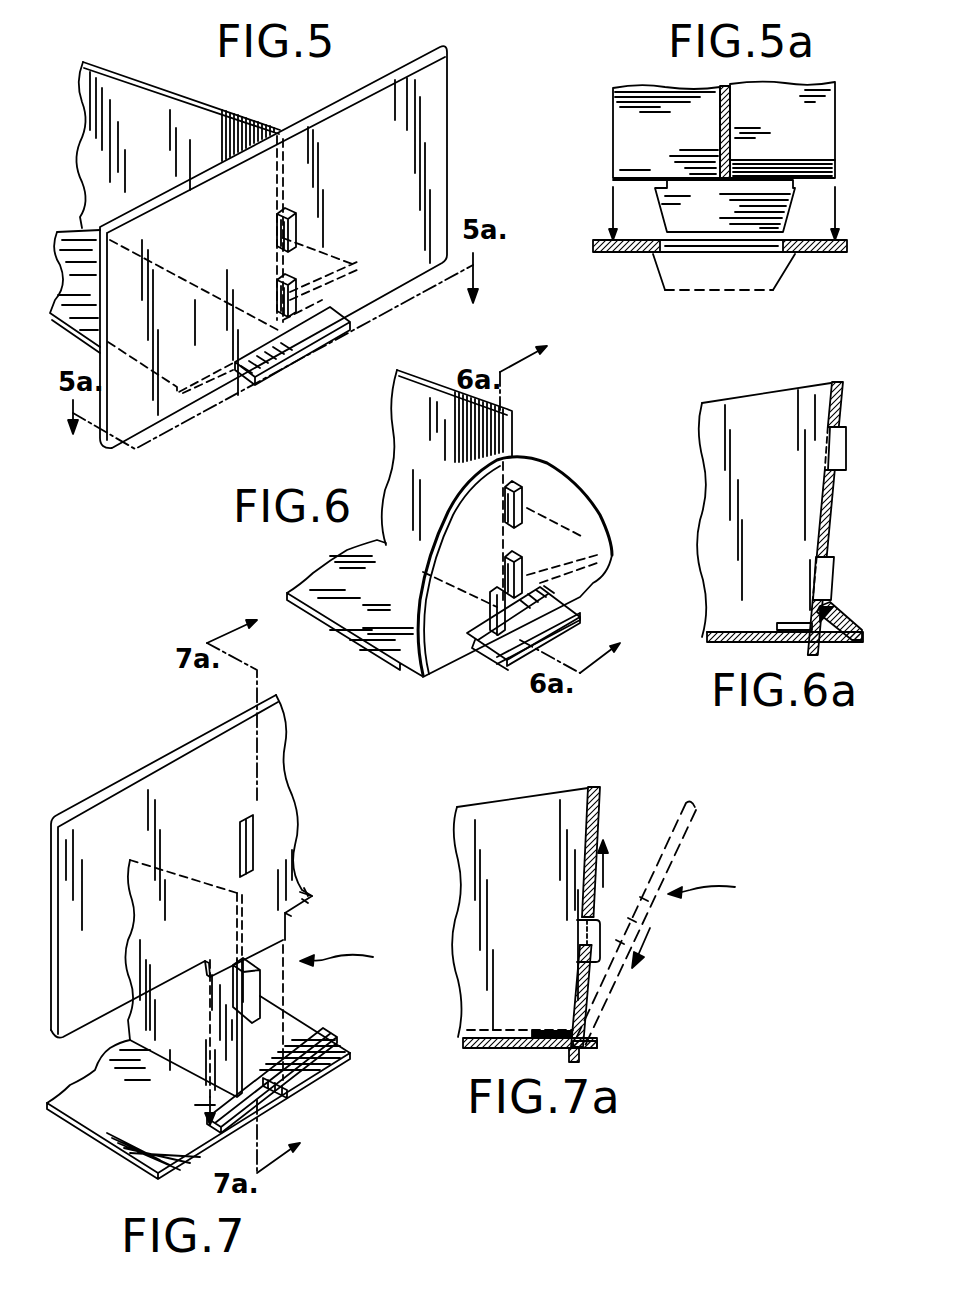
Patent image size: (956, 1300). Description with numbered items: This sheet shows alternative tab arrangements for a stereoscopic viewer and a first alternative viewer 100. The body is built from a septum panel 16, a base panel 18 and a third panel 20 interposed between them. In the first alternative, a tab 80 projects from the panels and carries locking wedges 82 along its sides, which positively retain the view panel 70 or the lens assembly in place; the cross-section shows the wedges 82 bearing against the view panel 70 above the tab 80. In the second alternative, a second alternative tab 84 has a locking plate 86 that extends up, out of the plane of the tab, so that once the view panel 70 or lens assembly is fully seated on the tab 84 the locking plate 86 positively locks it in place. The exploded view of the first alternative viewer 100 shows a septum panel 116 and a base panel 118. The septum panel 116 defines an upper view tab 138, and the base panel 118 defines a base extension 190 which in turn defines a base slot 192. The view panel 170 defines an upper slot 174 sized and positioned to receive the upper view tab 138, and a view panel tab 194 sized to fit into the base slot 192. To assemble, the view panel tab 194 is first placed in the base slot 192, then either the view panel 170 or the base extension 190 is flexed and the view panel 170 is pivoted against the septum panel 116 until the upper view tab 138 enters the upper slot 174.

In FIG. 5, the septum panel 16 is at (170, 142).
In FIG. 6, the septum panel 16 is at (431, 478).
In FIG. 6a, the septum panel 16 is at (781, 506).
In FIG. 5, the base panel 18 is at (91, 261).
In FIG. 5a, the base panel 18 is at (688, 141).
In FIG. 6, the base panel 18 is at (395, 612).
In FIG. 6a, the base panel 18 is at (720, 642).
In FIG. 5, the third panel 20 is at (335, 250).
In FIG. 5a, the third panel 20 is at (804, 141).
In FIG. 5, the view panel 70 is at (385, 189).
In FIG. 5a, the view panel 70 is at (810, 255).
In FIG. 6, the view panel 70 is at (557, 493).
In FIG. 6a, the view panel 70 is at (836, 502).
In FIG. 5, the tab 80 is at (313, 347).
In FIG. 5a, the tab 80 is at (744, 219).
In FIG. 5, the locking wedges 82 is at (332, 308).
In FIG. 5a, the locking wedges 82 is at (657, 203).
In FIG. 6, the second alternative tab 84 is at (573, 603).
In FIG. 6a, the second alternative tab 84 is at (853, 643).
In FIG. 6, the locking plate 86 is at (497, 632).
In FIG. 6a, the locking plate 86 is at (826, 618).
In FIG. 7, the first alternative viewer 100 is at (358, 959).
In FIG. 7a, the first alternative viewer 100 is at (724, 888).
In FIG. 7, the septum panel 116 is at (190, 1033).
In FIG. 7a, the septum panel 116 is at (540, 895).
In FIG. 7, the base panel 118 is at (160, 1110).
In FIG. 7a, the base panel 118 is at (468, 1048).
In FIG. 7, the upper view tab 138 is at (260, 1007).
In FIG. 7a, the upper view tab 138 is at (580, 934).
In FIG. 7, the view panel 170 is at (207, 817).
In FIG. 7a, the view panel 170 is at (600, 803).
In FIG. 7, the upper slot 174 is at (253, 840).
In FIG. 7a, the upper slot 174 is at (587, 913).
In FIG. 7, the base extension 190 is at (317, 1057).
In FIG. 7a, the base extension 190 is at (597, 1043).
In FIG. 7, the base slot 192 is at (263, 1088).
In FIG. 7a, the base slot 192 is at (582, 1050).
In FIG. 7, the view panel tab 194 is at (277, 927).
In FIG. 7a, the view panel tab 194 is at (570, 1057).